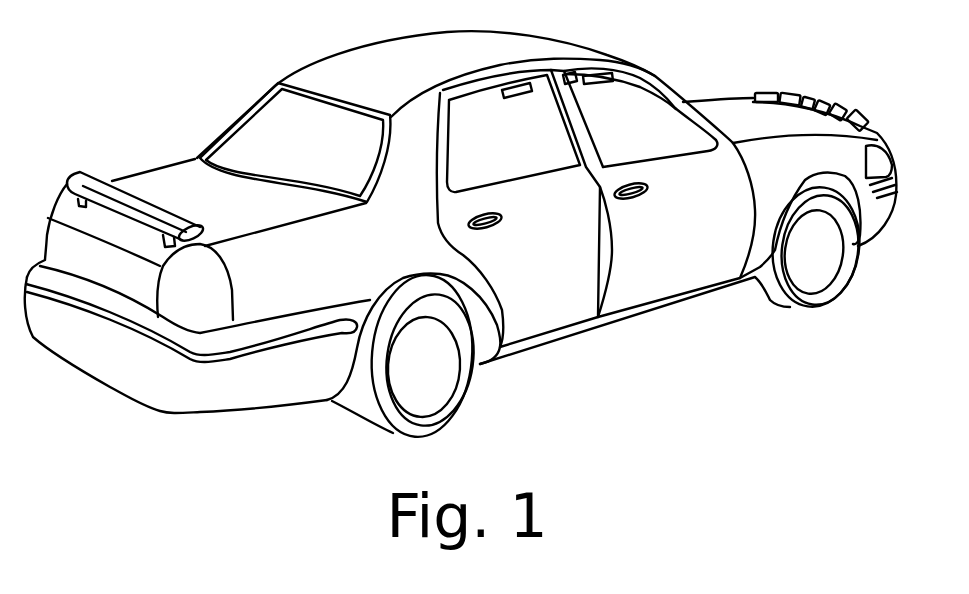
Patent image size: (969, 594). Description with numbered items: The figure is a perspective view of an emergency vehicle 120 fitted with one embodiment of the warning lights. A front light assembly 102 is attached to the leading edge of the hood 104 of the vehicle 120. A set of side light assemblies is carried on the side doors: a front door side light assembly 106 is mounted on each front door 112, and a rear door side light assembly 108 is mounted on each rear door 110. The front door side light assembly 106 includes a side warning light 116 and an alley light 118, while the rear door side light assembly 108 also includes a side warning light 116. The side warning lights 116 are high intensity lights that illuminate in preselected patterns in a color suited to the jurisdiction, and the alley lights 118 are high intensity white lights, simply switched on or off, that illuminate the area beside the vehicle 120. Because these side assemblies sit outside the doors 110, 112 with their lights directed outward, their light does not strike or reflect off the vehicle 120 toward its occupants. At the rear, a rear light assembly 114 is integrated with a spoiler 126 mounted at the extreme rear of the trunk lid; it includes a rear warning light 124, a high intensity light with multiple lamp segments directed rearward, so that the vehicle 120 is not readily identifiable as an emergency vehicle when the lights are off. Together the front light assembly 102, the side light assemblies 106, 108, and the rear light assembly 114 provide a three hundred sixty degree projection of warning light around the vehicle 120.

The front light assembly 102 is at (818, 95).
The hood 104 is at (717, 100).
The front door side light assembly 106 is at (646, 96).
The rear door side light assembly 108 is at (477, 110).
The rear door 110 is at (524, 208).
The front door 112 is at (657, 160).
The rear light assembly 114 is at (144, 171).
The side warning light 116 is at (636, 68).
The alley light 118 is at (568, 73).
The emergency vehicle 120 is at (335, 55).
The rear warning light 124 is at (106, 178).
The spoiler 126 is at (185, 213).